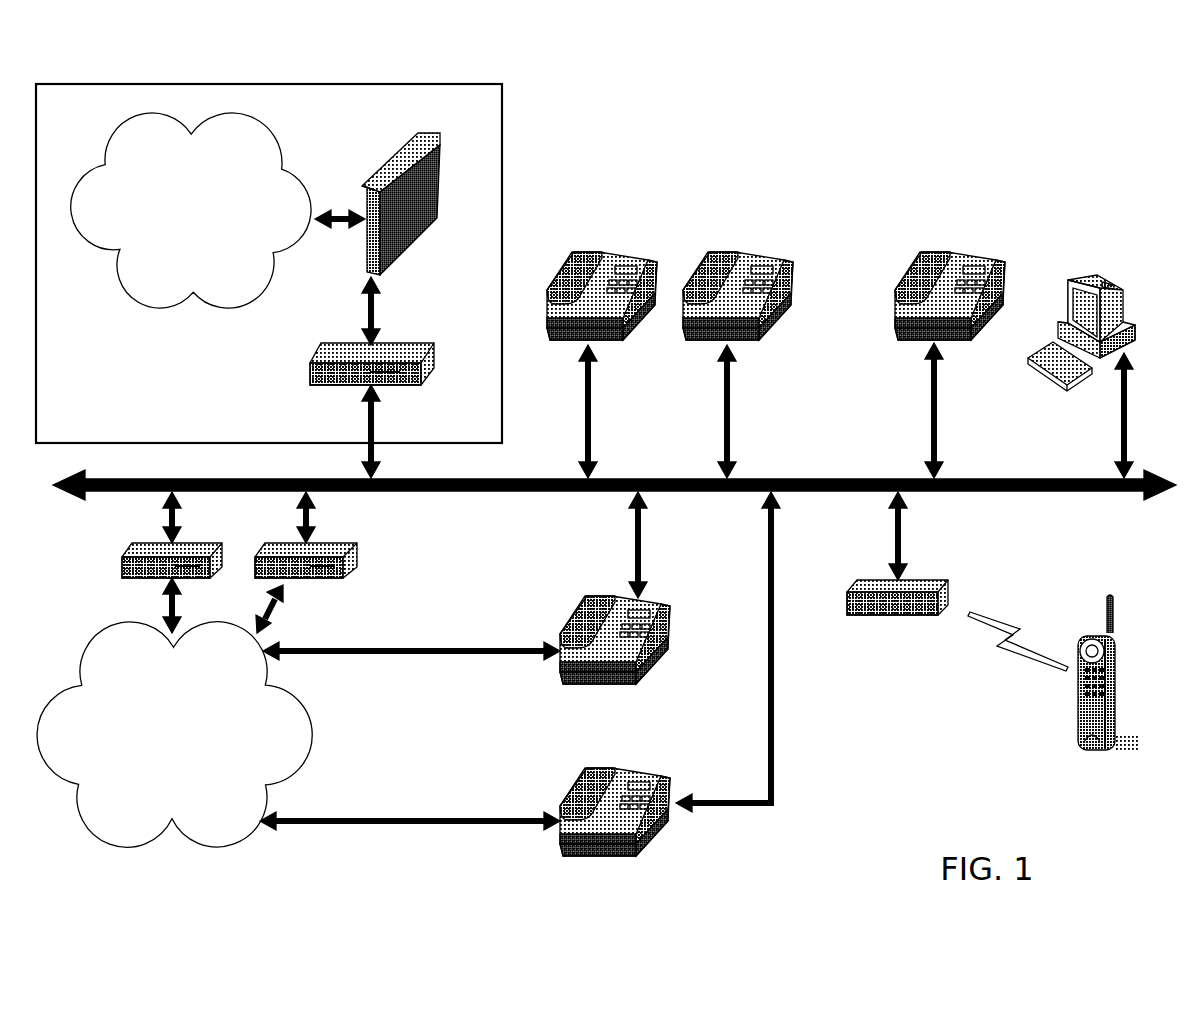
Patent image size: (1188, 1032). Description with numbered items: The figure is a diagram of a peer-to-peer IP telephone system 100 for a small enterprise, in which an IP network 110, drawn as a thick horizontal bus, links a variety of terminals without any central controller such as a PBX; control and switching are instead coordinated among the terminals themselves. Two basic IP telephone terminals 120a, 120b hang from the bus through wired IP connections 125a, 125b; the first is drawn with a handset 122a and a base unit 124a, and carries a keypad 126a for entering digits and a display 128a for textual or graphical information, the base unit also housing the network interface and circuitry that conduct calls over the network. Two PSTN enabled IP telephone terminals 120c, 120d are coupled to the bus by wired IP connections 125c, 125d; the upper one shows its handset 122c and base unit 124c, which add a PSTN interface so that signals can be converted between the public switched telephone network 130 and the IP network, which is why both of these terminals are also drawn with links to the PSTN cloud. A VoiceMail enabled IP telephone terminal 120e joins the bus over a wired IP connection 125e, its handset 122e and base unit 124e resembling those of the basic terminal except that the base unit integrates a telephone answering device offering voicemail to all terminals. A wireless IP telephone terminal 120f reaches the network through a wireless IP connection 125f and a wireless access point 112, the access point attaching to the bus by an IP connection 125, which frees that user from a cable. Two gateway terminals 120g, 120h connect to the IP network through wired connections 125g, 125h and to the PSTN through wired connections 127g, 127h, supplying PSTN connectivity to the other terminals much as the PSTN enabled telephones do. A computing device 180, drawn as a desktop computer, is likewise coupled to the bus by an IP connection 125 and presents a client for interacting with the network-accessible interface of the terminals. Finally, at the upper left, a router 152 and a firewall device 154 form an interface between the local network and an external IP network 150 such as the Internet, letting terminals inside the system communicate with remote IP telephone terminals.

The telephone system 100 is at (1094, 82).
The IP network 110 is at (1017, 479).
The wireless access point 112 is at (928, 582).
The basic IP telephone terminal 120a is at (644, 186).
The basic IP telephone terminal 120b is at (751, 191).
The PSTN enabled IP telephone terminal 120c is at (672, 584).
The PSTN enabled IP telephone terminal 120d is at (681, 772).
The VoiceMail enabled IP telephone terminal 120e is at (958, 189).
The wireless IP telephone terminal 120f is at (1124, 593).
The gateway terminal 120g is at (354, 535).
The gateway terminal 120h is at (204, 533).
The handset 122a is at (560, 271).
The handset 122c is at (573, 616).
The handset 122e is at (909, 272).
The base unit 124a is at (582, 330).
The base unit 124c is at (595, 674).
The base unit 124e is at (919, 317).
The IP connection 125 is at (1121, 423).
The wired IP connection 125a is at (586, 405).
The wired IP connection 125b is at (724, 411).
The wired IP connection 125c is at (635, 526).
The wired IP connection 125d is at (769, 531).
The wired IP connection 125e is at (931, 409).
The wireless IP connection 125f is at (1025, 632).
The wired connection 125g is at (304, 515).
The wired connection 125h is at (170, 513).
The keypad 126a is at (641, 322).
The wired connection 127g is at (273, 596).
The wired connection 127h is at (170, 605).
The display 128a is at (658, 253).
The PSTN 130 is at (174, 734).
The external IP network 150 is at (191, 210).
The router 152 is at (396, 349).
The firewall device 154 is at (423, 182).
The computing device 180 is at (1113, 266).